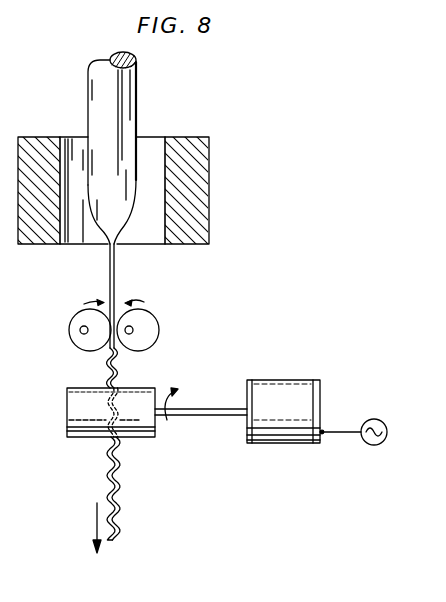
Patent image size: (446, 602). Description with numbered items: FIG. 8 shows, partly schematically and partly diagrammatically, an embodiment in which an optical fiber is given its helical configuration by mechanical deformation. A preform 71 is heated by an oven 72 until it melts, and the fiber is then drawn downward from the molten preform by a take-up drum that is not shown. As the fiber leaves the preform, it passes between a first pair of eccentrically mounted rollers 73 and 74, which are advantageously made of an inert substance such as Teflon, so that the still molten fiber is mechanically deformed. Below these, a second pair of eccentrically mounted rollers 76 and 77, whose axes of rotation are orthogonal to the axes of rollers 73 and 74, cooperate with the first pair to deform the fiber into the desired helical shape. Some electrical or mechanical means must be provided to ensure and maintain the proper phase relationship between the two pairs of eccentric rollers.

The preform 71 is at (122, 104).
The oven 72 is at (203, 200).
The eccentrically mounted roller 73 is at (68, 319).
The eccentrically mounted roller 74 is at (155, 318).
The eccentrically mounted roller 76 is at (75, 400).
The eccentrically mounted roller 77 is at (67, 420).